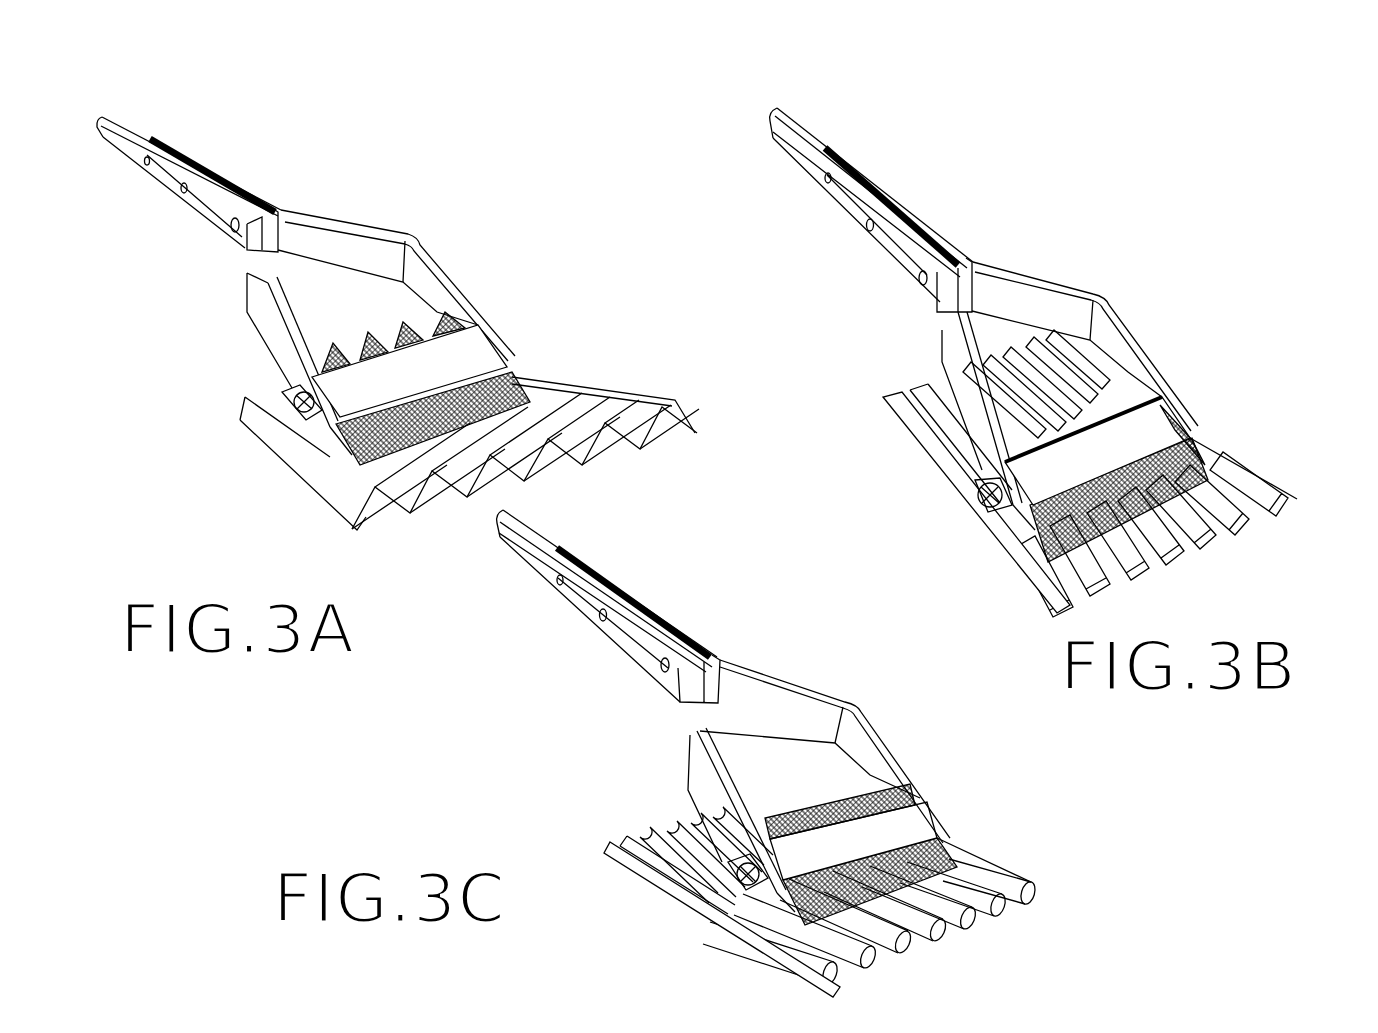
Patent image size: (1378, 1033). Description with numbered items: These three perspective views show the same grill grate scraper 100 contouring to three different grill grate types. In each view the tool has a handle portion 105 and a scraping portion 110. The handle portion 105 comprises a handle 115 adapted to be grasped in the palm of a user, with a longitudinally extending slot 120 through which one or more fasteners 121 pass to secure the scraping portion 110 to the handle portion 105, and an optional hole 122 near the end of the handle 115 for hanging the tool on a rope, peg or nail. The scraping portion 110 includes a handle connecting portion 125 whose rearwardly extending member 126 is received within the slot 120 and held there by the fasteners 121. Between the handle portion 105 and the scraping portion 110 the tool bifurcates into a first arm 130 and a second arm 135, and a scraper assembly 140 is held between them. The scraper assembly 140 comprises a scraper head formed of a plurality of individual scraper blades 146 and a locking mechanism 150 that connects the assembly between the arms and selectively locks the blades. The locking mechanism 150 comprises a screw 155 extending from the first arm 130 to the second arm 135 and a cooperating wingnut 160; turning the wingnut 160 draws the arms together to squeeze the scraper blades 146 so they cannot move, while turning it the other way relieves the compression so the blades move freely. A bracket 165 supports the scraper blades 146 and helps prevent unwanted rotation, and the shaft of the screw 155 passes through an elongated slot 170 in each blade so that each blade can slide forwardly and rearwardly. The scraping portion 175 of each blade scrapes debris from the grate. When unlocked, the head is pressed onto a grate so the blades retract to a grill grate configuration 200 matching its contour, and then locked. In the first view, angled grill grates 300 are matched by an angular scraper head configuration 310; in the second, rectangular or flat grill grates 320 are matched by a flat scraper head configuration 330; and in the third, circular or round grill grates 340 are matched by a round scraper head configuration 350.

In FIG. 3A, the grill grate scraper 100 is at (447, 159).
In FIG. 3B, the grill grate scraper 100 is at (1144, 159).
In FIG. 3C, the grill grate scraper 100 is at (743, 534).
In FIG. 3A, the handle portion 105 is at (223, 142).
In FIG. 3B, the handle portion 105 is at (929, 146).
In FIG. 3C, the handle portion 105 is at (659, 522).
In FIG. 3A, the scraping portion 110 is at (488, 219).
In FIG. 3B, the scraping portion 110 is at (1209, 287).
In FIG. 3C, the scraping portion 110 is at (934, 716).
In FIG. 3A, the handle 115 is at (130, 118).
In FIG. 3B, the handle 115 is at (810, 127).
In FIG. 3C, the handle 115 is at (536, 527).
In FIG. 3A, the longitudinally extending slot 120 is at (226, 178).
In FIG. 3B, the longitudinally extending slot 120 is at (891, 207).
In FIG. 3C, the longitudinally extending slot 120 is at (636, 605).
In FIG. 3A, the fasteners 121 is at (147, 166).
In FIG. 3B, the fasteners 121 is at (919, 279).
In FIG. 3C, the fasteners 121 is at (661, 668).
In FIG. 3A, the hole 122 is at (100, 132).
In FIG. 3B, the hole 122 is at (771, 128).
In FIG. 3C, the hole 122 is at (499, 543).
In FIG. 3A, the handle connecting portion 125 is at (298, 191).
In FIG. 3B, the handle connecting portion 125 is at (994, 254).
In FIG. 3C, the handle connecting portion 125 is at (737, 634).
In FIG. 3A, the rearwardly extending member 126 is at (158, 144).
In FIG. 3B, the rearwardly extending member 126 is at (839, 161).
In FIG. 3C, the rearwardly extending member 126 is at (574, 564).
In FIG. 3A, the first arm 130 is at (376, 238).
In FIG. 3B, the first arm 130 is at (1115, 325).
In FIG. 3C, the first arm 130 is at (866, 712).
In FIG. 3A, the second arm 135 is at (264, 312).
In FIG. 3B, the second arm 135 is at (951, 371).
In FIG. 3C, the second arm 135 is at (700, 769).
In FIG. 3A, the scraper assembly 140 is at (613, 279).
In FIG. 3B, the scraper assembly 140 is at (1253, 319).
In FIG. 3C, the scraper assembly 140 is at (1027, 762).
In FIG. 3A, the scraper blades 146 is at (371, 332).
In FIG. 3B, the scraper blades 146 is at (1213, 481).
In FIG. 3C, the scraper blades 146 is at (830, 806).
In FIG. 3A, the locking mechanism 150 is at (235, 450).
In FIG. 3B, the locking mechanism 150 is at (961, 532).
In FIG. 3C, the locking mechanism 150 is at (682, 918).
In FIG. 3A, the screw 155 is at (290, 410).
In FIG. 3B, the screw 155 is at (982, 498).
In FIG. 3C, the screw 155 is at (736, 872).
In FIG. 3A, the wingnut 160 is at (283, 418).
In FIG. 3B, the wingnut 160 is at (990, 482).
In FIG. 3C, the wingnut 160 is at (735, 866).
In FIG. 3A, the bracket 165 is at (521, 346).
In FIG. 3B, the bracket 165 is at (1199, 400).
In FIG. 3C, the bracket 165 is at (943, 815).
In FIG. 3A, the slot 170 is at (331, 452).
In FIG. 3B, the slot 170 is at (1034, 521).
In FIG. 3C, the slot 170 is at (775, 905).
In FIG. 3A, the scraping portion 175 is at (297, 516).
In FIG. 3B, the scraping portion 175 is at (1011, 586).
In FIG. 3C, the scraping portion 175 is at (762, 960).
In FIG. 3A, the grill grate configuration 200 is at (631, 312).
In FIG. 3B, the grill grate configuration 200 is at (1259, 353).
In FIG. 3C, the grill grate configuration 200 is at (1047, 795).
In FIG. 3A, the angled grill grates 300 is at (651, 379).
In FIG. 3A, the angular scraper head configuration 310 is at (621, 347).
In FIG. 3B, the rectangular or flat grill grates 320 is at (1244, 455).
In FIG. 3B, the flat scraper head configuration 330 is at (1249, 423).
In FIG. 3C, the circular or round grill grates 340 is at (1064, 864).
In FIG. 3C, the round scraper head configuration 350 is at (1052, 827).